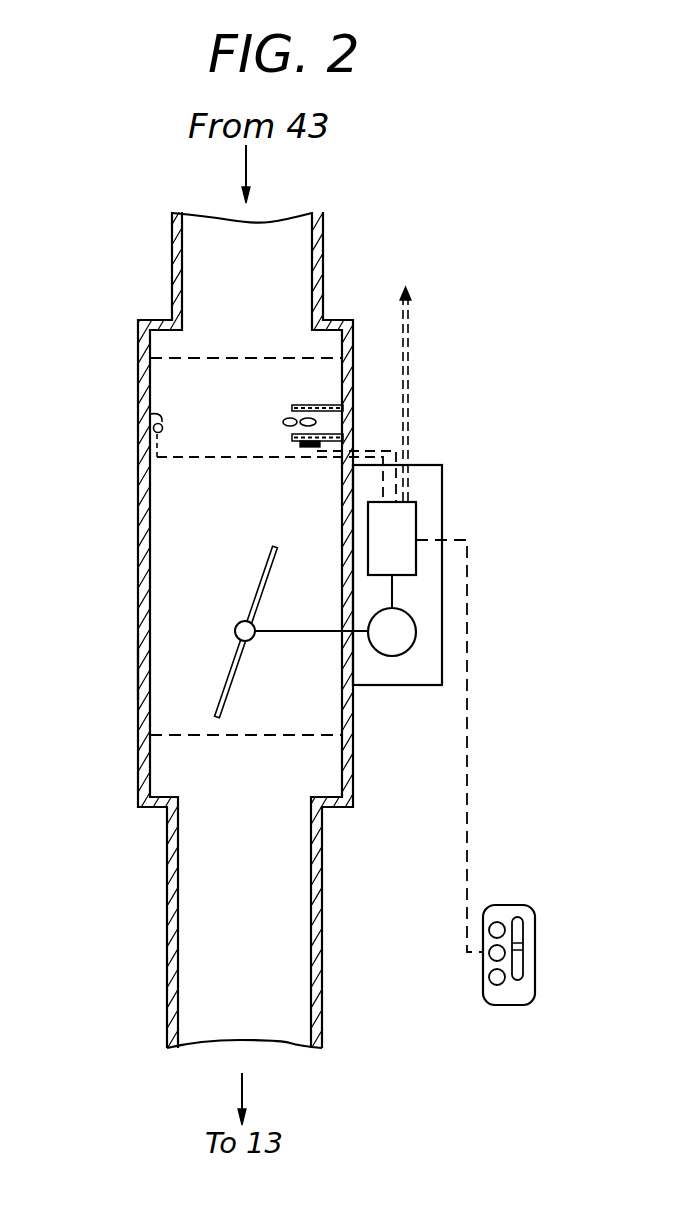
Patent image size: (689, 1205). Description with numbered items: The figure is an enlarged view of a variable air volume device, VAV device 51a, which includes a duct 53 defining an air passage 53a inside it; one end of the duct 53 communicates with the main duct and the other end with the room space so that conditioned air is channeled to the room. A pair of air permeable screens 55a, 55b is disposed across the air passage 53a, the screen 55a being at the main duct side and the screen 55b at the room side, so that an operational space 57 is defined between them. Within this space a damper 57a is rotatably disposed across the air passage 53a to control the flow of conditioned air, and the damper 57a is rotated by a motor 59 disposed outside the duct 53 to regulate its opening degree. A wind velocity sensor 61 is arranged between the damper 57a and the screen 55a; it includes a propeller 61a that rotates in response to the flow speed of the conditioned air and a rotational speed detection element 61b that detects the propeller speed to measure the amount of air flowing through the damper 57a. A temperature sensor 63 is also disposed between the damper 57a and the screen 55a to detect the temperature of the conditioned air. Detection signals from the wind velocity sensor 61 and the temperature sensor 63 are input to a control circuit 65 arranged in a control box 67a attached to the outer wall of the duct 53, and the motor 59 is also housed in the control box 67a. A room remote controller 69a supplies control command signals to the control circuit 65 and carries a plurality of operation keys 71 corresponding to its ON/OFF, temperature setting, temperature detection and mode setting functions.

The VAV device 51a is at (126, 662).
The duct 53 is at (138, 497).
The air passage 53a is at (197, 555).
The air permeable screen 55a is at (198, 357).
The air permeable screen 55b is at (173, 736).
The operational space 57 is at (313, 697).
The damper 57a is at (240, 648).
The motor 59 is at (405, 631).
The wind velocity sensor 61 is at (332, 425).
The propeller 61a is at (318, 406).
The rotational speed detection element 61b is at (318, 441).
The temperature sensor 63 is at (150, 414).
The control circuit 65 is at (398, 518).
The control box 67a is at (442, 567).
The room remote controller 69a is at (528, 932).
The operation keys 71 is at (523, 908).